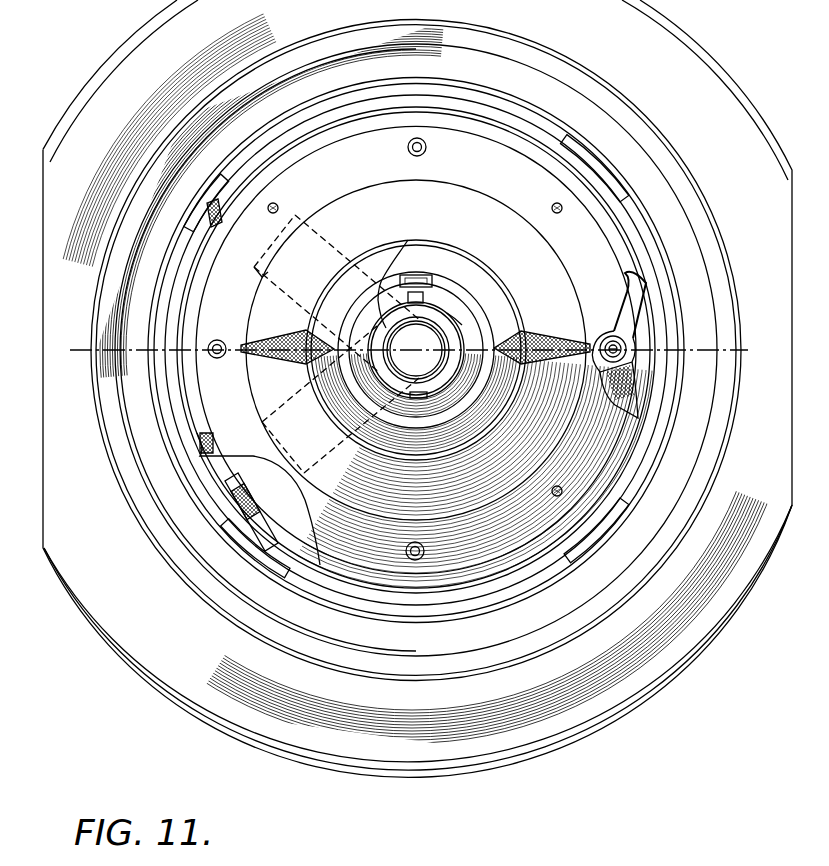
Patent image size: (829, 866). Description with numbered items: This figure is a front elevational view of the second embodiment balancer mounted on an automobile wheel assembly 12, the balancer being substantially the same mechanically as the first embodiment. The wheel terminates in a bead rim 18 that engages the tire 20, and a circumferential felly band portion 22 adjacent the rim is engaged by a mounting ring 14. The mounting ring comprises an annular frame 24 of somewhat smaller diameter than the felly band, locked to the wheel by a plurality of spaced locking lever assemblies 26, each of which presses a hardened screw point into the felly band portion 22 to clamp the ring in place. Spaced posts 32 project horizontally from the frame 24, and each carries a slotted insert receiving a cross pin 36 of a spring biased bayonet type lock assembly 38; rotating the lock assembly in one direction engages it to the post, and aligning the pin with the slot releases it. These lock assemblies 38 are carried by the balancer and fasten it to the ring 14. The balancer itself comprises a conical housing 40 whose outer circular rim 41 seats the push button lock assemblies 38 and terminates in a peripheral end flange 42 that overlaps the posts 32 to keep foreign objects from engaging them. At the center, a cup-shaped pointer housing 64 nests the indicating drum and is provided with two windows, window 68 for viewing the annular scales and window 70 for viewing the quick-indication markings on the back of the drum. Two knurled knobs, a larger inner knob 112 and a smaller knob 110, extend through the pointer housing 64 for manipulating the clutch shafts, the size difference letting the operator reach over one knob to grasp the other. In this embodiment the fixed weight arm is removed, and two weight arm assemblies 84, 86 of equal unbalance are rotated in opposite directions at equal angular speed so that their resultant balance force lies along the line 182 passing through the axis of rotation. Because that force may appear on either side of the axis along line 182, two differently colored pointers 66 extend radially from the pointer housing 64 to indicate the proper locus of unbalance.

The automobile wheel assembly 12 is at (706, 30).
The tire 20 is at (733, 182).
The bead rim 18 is at (260, 572).
The locking lever assemblies 26 is at (604, 172).
The bayonet type lock assembly 38 is at (238, 320).
The felly band portion 22 is at (205, 460).
The annular frame 24 is at (250, 470).
The mounting ring 14 is at (283, 528).
The weight arm assembly 84 is at (328, 229).
The weight arm assembly 86 is at (325, 468).
The pointer housing 64 is at (408, 240).
The window 68 is at (432, 278).
The window 70 is at (424, 296).
The knob 112 is at (447, 313).
The knob 110 is at (387, 364).
The pointer 66 is at (300, 366).
The housing 40 is at (557, 306).
The outer circular rim 41 is at (594, 260).
The peripheral end flange 42 is at (628, 278).
The posts 32 is at (632, 334).
The cross pin 36 is at (627, 350).
The line 182 is at (748, 350).